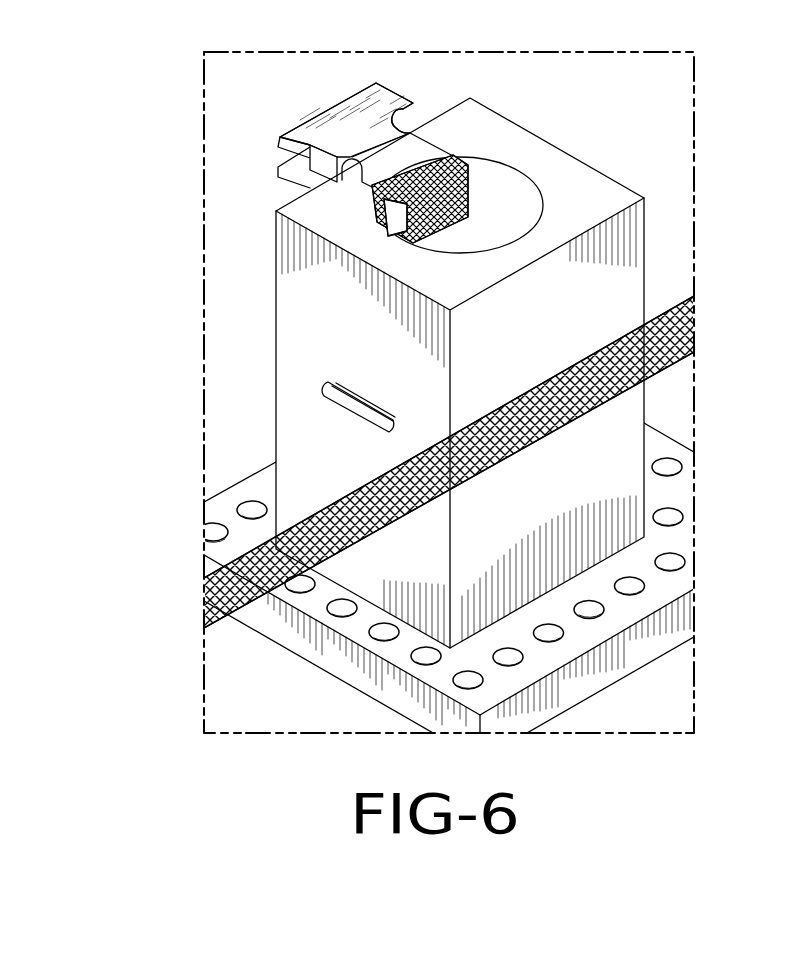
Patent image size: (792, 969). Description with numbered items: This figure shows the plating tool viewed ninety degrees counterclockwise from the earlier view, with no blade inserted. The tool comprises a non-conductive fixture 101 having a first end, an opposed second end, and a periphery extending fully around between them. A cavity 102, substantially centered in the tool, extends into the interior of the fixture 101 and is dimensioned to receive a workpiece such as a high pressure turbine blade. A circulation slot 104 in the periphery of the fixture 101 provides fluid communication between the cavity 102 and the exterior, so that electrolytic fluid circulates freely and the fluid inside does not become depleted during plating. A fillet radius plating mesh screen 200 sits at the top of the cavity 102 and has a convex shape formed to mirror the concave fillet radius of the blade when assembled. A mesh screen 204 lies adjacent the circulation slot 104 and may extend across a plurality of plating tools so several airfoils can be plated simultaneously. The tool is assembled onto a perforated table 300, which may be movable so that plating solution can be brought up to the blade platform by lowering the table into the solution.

The non-conductive fixture 101 is at (295, 312).
The cavity 102 is at (517, 210).
The circulation slot 104 is at (372, 405).
The fillet radius plating mesh screen 200 is at (452, 158).
The mesh screen 204 is at (307, 540).
The perforated table 300 is at (671, 562).